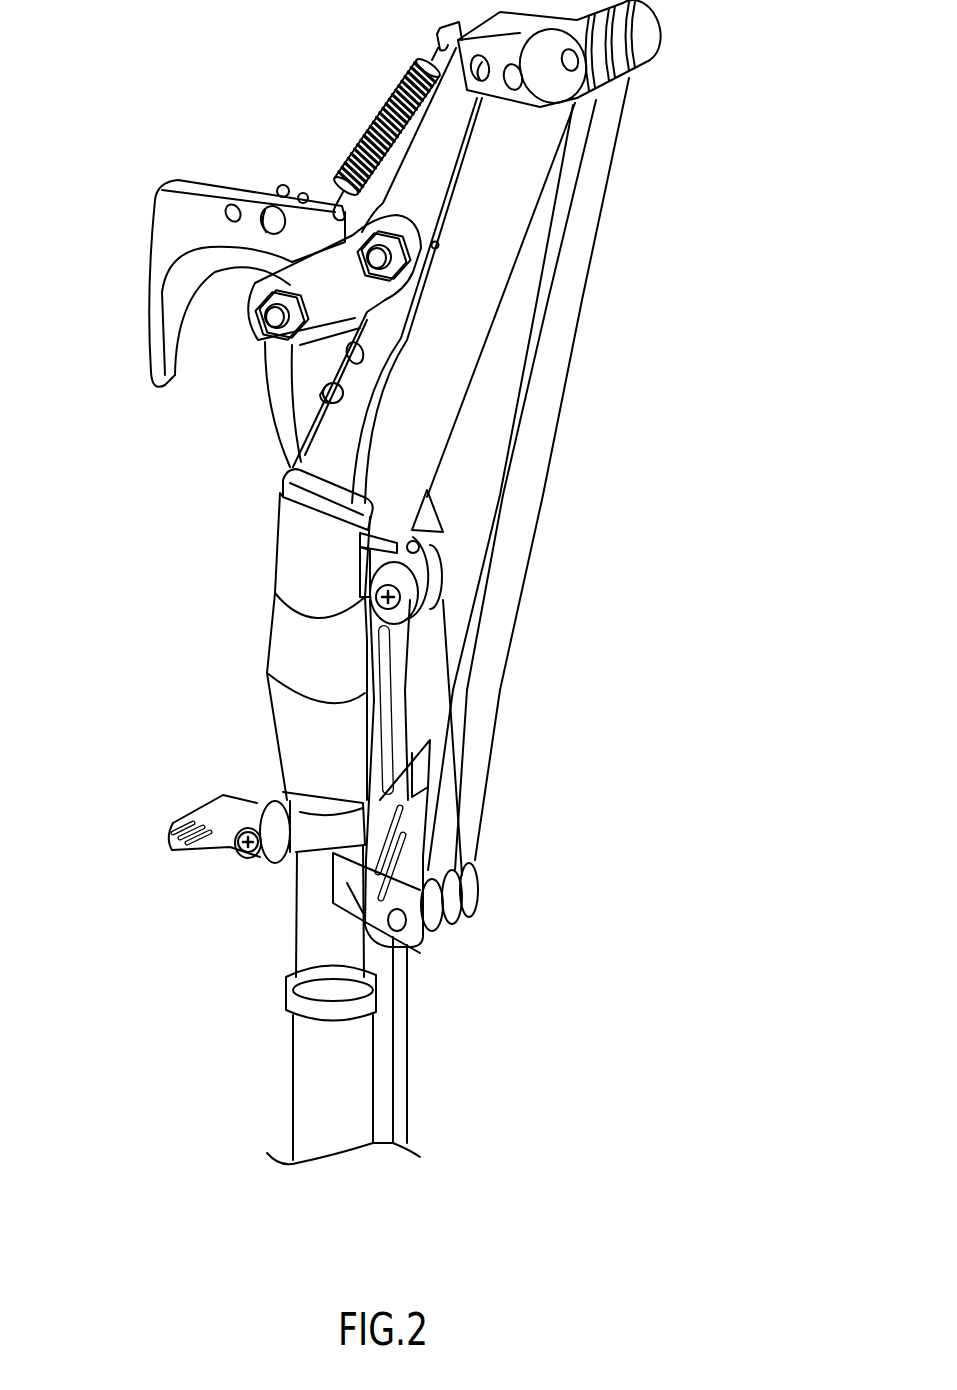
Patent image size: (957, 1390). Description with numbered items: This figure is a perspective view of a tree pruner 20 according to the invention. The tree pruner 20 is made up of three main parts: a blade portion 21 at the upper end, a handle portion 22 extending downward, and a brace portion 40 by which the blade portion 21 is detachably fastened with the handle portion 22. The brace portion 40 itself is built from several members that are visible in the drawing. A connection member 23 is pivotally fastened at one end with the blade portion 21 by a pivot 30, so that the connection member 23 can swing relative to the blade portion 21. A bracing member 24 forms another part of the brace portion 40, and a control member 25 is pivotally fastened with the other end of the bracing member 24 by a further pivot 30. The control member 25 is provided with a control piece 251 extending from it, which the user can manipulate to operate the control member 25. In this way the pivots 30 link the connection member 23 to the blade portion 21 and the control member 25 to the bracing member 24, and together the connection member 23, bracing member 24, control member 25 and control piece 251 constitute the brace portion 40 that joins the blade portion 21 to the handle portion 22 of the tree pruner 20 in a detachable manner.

The tree pruner 20 is at (720, 246).
The blade portion 21 is at (293, 540).
The handle portion 22 is at (310, 942).
The connection member 23 is at (433, 692).
The bracing member 24 is at (392, 937).
The control member 25 is at (215, 793).
The control piece 251 is at (172, 820).
The pivot 30 is at (400, 600).
The brace portion 40 is at (408, 872).